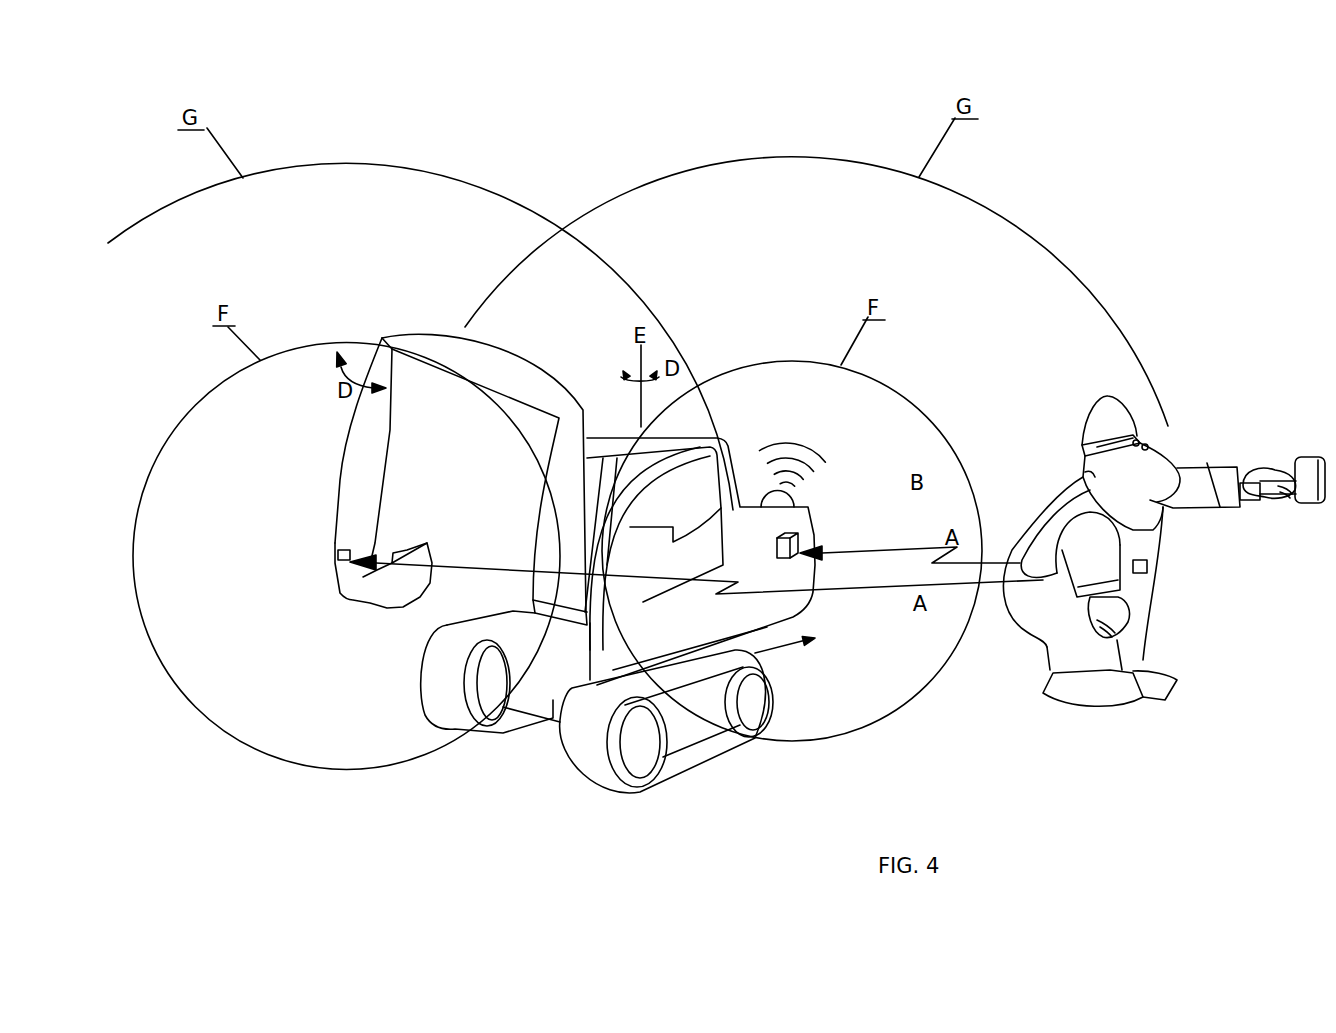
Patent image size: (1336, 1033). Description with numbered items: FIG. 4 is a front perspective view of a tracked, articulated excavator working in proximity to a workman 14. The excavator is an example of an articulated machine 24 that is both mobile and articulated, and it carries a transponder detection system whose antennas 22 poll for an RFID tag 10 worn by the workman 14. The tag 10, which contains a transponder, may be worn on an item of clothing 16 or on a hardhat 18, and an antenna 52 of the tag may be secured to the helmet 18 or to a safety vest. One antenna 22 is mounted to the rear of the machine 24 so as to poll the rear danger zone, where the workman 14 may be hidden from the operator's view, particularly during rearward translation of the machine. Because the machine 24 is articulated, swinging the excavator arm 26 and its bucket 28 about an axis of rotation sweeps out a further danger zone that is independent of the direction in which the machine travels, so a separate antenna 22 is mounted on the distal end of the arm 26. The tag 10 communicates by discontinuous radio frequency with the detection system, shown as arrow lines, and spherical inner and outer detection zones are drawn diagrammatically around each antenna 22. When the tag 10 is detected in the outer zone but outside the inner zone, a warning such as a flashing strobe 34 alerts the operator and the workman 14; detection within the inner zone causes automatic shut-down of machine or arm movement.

The RFID tag 10 is at (1147, 567).
The workman 14 is at (1039, 442).
The item of clothing 16 is at (1050, 510).
The hardhat 18 is at (1100, 410).
The antenna 22 is at (337, 553).
The articulated machine 24 is at (702, 397).
The excavator arm 26 is at (347, 428).
The bucket 28 is at (408, 610).
The flashing strobe 34 is at (793, 505).
The antenna 52 is at (1123, 407).